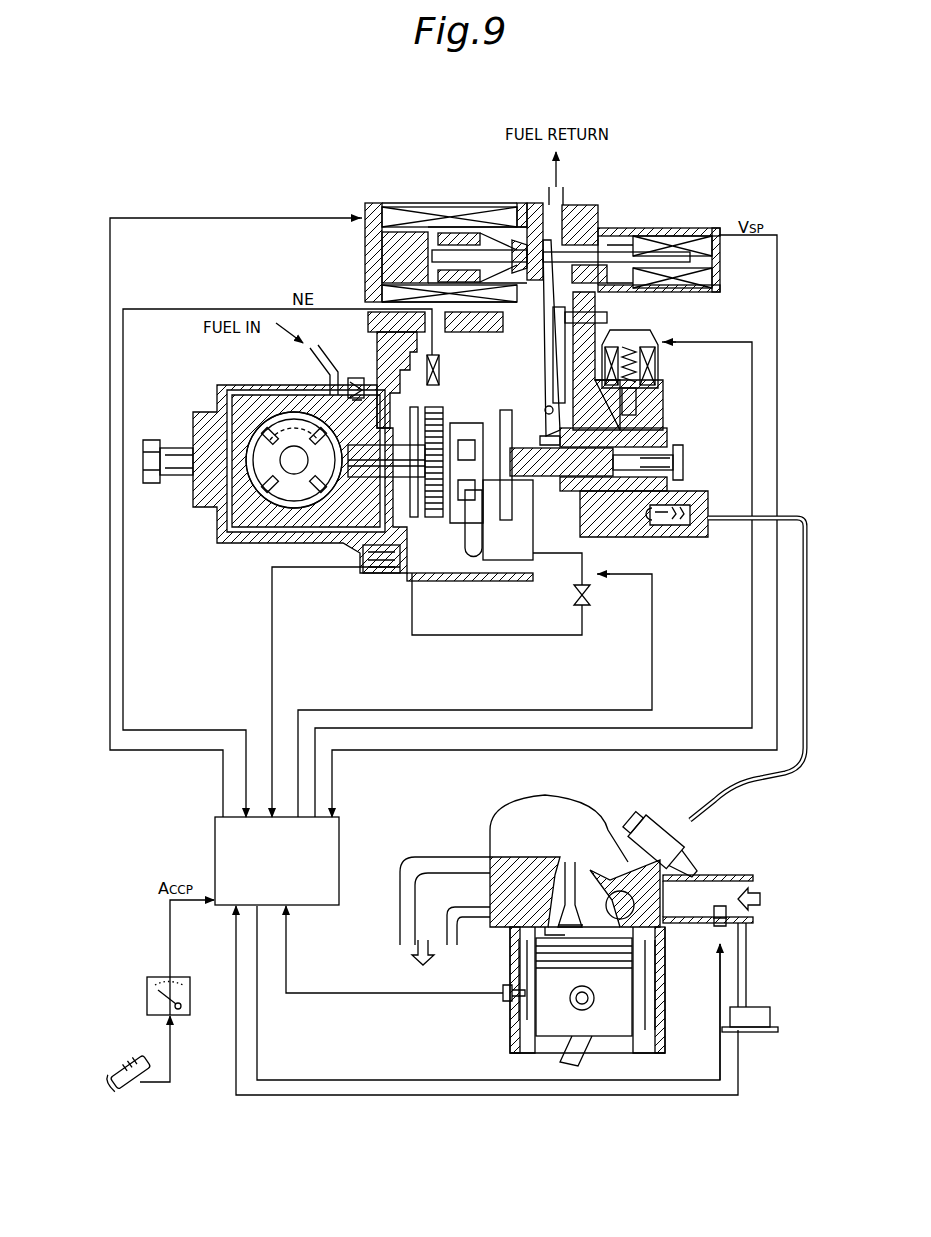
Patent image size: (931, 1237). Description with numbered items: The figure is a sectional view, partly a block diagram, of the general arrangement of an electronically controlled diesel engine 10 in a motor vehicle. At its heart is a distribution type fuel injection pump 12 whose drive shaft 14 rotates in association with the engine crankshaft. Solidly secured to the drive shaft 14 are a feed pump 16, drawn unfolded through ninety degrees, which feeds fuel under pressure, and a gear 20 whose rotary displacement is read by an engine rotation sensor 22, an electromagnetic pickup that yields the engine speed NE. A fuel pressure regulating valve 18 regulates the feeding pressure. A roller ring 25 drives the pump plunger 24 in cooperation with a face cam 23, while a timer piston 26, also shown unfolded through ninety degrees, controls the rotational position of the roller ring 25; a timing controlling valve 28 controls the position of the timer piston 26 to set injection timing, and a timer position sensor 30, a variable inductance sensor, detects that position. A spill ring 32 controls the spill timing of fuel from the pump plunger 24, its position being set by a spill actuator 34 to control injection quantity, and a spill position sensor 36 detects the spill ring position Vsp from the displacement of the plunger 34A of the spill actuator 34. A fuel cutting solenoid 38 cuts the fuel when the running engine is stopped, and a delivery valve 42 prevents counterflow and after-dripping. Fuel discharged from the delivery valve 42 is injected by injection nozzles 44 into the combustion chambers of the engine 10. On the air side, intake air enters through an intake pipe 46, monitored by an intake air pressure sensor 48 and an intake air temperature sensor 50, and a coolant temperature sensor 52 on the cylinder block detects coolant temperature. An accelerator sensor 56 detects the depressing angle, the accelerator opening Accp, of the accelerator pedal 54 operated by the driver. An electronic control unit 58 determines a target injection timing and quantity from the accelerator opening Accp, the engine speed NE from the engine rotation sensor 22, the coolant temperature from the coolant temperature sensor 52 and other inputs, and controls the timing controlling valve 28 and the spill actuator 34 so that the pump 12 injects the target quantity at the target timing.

The diesel engine 10 is at (588, 808).
The distribution type fuel injection pump 12 is at (655, 214).
The drive shaft 14 is at (166, 446).
The feed pump 16 is at (268, 518).
The fuel pressure regulating valve 18 is at (362, 384).
The gear 20 is at (441, 424).
The engine rotation sensor 22 is at (441, 378).
The face cam 23 is at (487, 520).
The pump plunger 24 is at (661, 440).
The roller ring 25 is at (470, 495).
The timer piston 26 is at (511, 564).
The timing controlling valve 28 is at (590, 596).
The timer position sensor 30 is at (376, 574).
The spill ring 32 is at (540, 432).
The spill actuator 34 is at (481, 200).
The plunger of the spill actuator 34A is at (531, 232).
The spill position sensor 36 is at (689, 228).
The fuel cutting solenoid 38 is at (660, 366).
The delivery valve 42 is at (674, 538).
The injection nozzle 44 is at (693, 833).
The intake pipe 46 is at (716, 875).
The intake air pressure sensor 48 is at (760, 1006).
The intake air temperature sensor 50 is at (713, 925).
The coolant temperature sensor 52 is at (505, 984).
The accelerator pedal 54 is at (135, 1090).
The accelerator sensor 56 is at (184, 1008).
The electronic control unit 58 is at (340, 846).